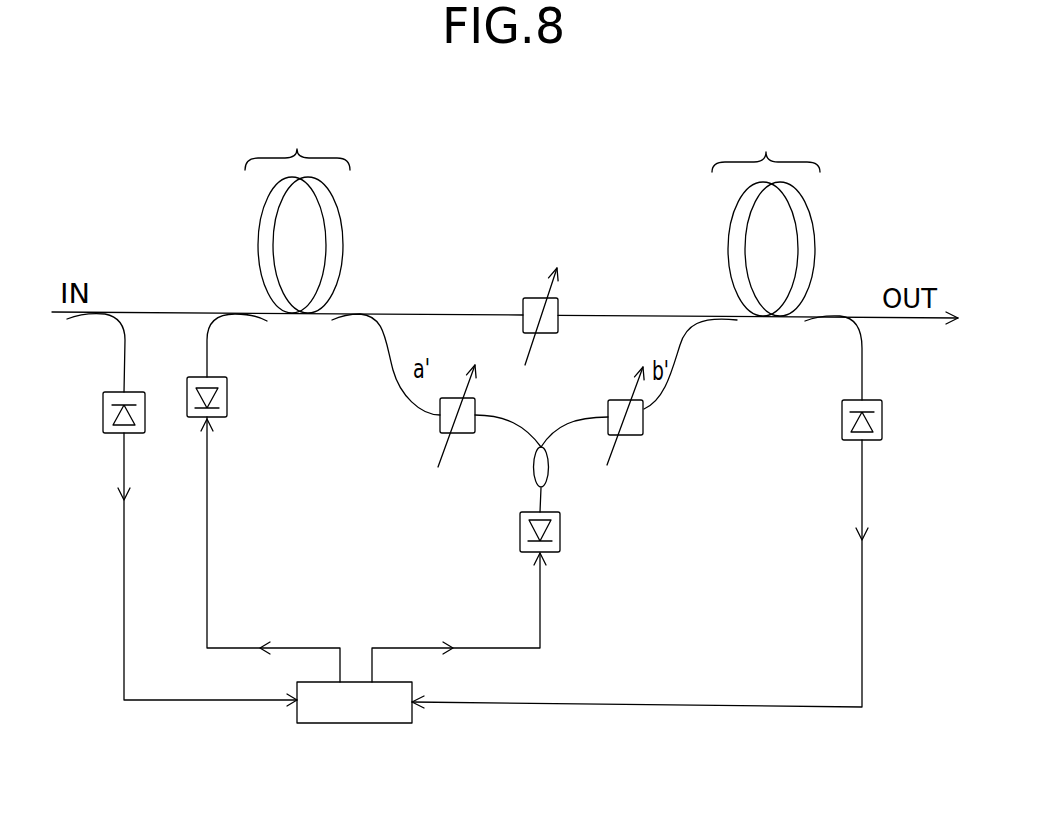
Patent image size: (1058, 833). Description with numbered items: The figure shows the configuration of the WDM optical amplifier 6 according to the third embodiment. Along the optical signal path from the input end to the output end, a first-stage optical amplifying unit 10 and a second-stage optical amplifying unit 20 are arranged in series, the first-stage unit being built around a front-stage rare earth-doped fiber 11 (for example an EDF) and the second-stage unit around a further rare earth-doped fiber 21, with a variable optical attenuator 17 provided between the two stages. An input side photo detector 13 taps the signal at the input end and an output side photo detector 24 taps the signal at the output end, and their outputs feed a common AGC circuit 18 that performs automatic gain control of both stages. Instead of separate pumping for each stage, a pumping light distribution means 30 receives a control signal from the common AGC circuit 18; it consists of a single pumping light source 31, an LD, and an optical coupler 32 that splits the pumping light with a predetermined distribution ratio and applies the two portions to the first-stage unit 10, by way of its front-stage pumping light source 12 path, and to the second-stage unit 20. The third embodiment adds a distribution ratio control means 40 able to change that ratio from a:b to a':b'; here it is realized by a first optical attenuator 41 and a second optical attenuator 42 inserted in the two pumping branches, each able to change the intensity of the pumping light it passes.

The WDM optical amplifier 6 is at (550, 132).
The first-stage optical amplifying unit 10 is at (297, 143).
The front-stage rare earth-doped fiber 11 is at (317, 238).
The front-stage pumping light source 12 is at (228, 395).
The input side photo detector 13 is at (103, 408).
The variable optical attenuator 17 is at (559, 307).
The common AGC circuit 18 is at (357, 725).
The second-stage optical amplifying unit 20 is at (766, 146).
The rare earth-doped fiber 21 is at (757, 237).
The output side photo detector 24 is at (883, 418).
The pumping light distribution means 30 is at (532, 501).
The single pumping light source 31 is at (561, 537).
The optical coupler 32 is at (549, 466).
The distribution ratio control means 40 is at (572, 412).
The first optical attenuator 41 is at (440, 428).
The second optical attenuator 42 is at (644, 420).